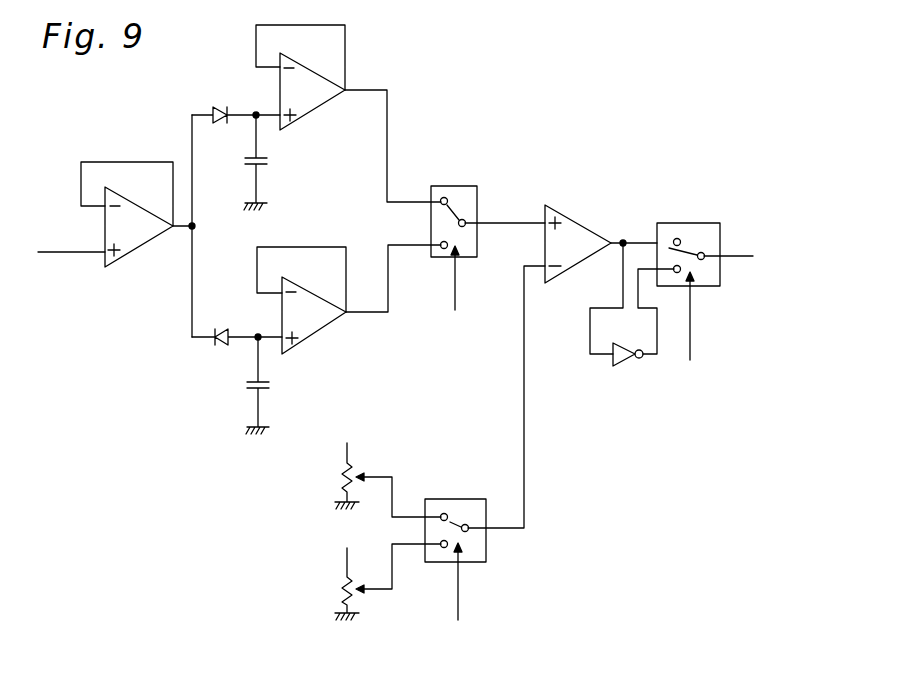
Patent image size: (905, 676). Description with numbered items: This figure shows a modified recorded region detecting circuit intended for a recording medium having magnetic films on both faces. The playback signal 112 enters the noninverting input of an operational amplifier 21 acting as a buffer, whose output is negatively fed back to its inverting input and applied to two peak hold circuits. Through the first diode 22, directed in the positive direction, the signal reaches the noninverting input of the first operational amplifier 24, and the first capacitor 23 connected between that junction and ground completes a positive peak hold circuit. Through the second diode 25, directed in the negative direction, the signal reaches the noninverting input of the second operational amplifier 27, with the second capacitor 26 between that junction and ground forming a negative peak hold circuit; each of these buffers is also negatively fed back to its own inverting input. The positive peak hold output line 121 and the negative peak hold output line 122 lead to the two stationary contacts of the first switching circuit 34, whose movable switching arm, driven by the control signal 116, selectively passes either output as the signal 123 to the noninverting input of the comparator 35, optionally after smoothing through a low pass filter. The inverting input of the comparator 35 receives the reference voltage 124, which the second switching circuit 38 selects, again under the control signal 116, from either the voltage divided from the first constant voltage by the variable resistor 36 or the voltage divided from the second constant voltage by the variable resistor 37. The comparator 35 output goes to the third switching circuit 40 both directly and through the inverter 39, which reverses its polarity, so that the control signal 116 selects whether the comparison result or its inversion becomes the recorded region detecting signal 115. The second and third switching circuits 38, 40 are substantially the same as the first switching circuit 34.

The operational amplifier 21 is at (136, 252).
The playback signal 112 is at (62, 252).
The first diode 22 is at (213, 106).
The first capacitor 23 is at (270, 160).
The first operational amplifier 24 is at (318, 77).
The second diode 25 is at (222, 347).
The second capacitor 26 is at (272, 384).
The second operational amplifier 27 is at (318, 337).
The peak level signal line 121 is at (388, 113).
The bottom level signal line 122 is at (405, 243).
The first switching circuit 34 is at (455, 186).
The output signal 123 is at (507, 223).
The comparator 35 is at (578, 216).
The reference voltage 124 is at (524, 462).
The inverter 39 is at (623, 362).
The third switching circuit 40 is at (683, 223).
The recorded region detecting signal 115 is at (735, 257).
The second switching circuit 38 is at (443, 499).
The variable resistor 36 is at (340, 477).
The variable resistor 37 is at (340, 589).
The control signal 116 is at (457, 290).